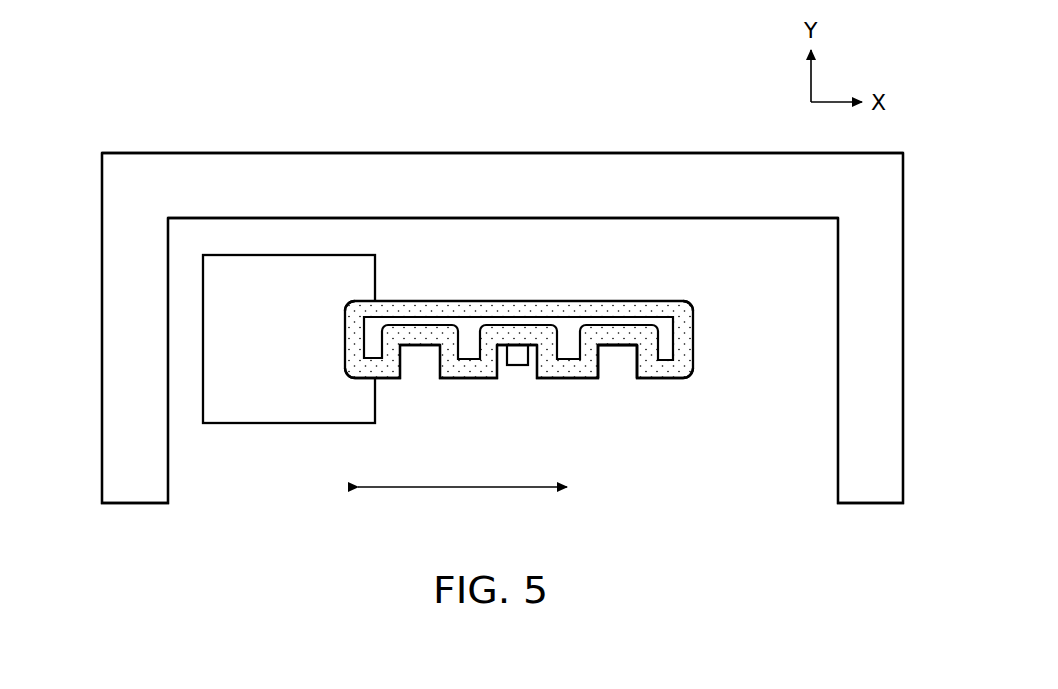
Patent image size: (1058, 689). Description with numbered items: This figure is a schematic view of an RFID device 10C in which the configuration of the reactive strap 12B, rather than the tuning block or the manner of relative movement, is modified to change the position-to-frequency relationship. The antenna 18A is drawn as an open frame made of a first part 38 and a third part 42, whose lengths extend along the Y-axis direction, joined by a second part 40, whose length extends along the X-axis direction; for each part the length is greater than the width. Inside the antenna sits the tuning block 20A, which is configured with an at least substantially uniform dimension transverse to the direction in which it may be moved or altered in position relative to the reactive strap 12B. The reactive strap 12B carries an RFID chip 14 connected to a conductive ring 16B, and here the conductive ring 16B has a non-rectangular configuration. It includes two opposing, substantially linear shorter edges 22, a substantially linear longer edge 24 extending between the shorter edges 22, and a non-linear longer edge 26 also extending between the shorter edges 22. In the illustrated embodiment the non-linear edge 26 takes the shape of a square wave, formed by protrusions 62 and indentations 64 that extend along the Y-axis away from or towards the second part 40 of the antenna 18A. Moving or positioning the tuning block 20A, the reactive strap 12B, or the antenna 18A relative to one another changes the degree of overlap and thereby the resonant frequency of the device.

The RFID device 10C is at (166, 113).
The antenna 18A is at (255, 152).
The second part 40 is at (352, 152).
The first part 38 is at (115, 441).
The third part 42 is at (892, 441).
The tuning block 20A is at (290, 424).
The conductive ring 16B is at (704, 297).
The substantially linear longer edge 24 is at (478, 300).
The shorter edges 22 is at (343, 336).
The RFID chip 14 is at (515, 366).
The protrusions 62 is at (383, 379).
The non-linear longer edge 26 is at (583, 379).
The indentations 64 is at (426, 348).
The reactive strap 12B is at (628, 375).